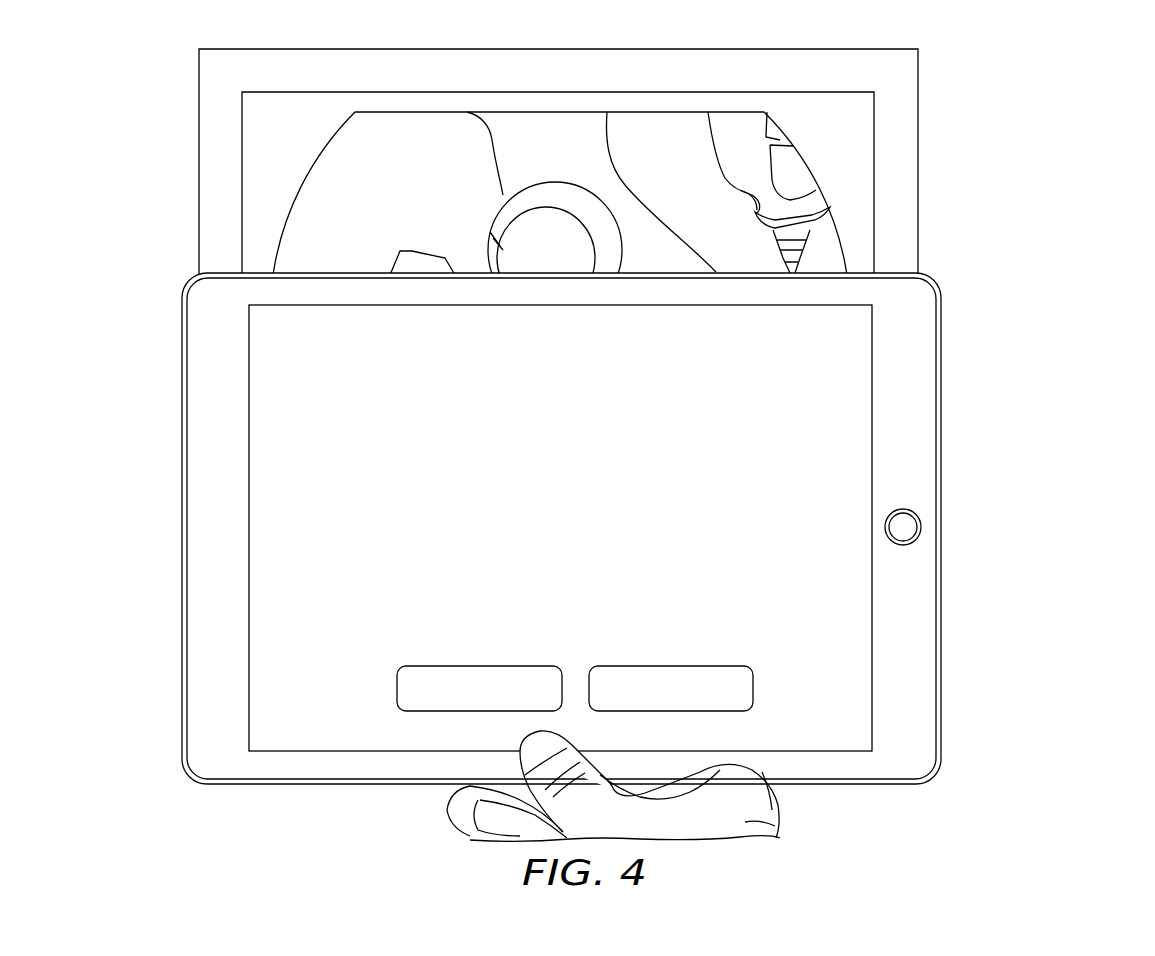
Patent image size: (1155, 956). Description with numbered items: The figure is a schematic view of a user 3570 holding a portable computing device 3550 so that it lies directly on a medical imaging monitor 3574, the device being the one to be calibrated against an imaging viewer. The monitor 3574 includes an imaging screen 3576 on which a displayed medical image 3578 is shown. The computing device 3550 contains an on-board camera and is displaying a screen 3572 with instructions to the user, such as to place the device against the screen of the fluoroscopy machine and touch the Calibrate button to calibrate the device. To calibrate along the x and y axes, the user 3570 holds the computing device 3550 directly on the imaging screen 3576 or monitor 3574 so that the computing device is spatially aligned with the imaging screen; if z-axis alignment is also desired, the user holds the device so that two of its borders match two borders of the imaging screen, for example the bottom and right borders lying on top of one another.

The portable computing device 3550 is at (943, 310).
The user 3570 is at (775, 826).
The screen 3572 is at (880, 419).
The medical imaging monitor 3574 is at (918, 123).
The imaging screen 3576 is at (592, 92).
The displayed medical image 3578 is at (417, 192).